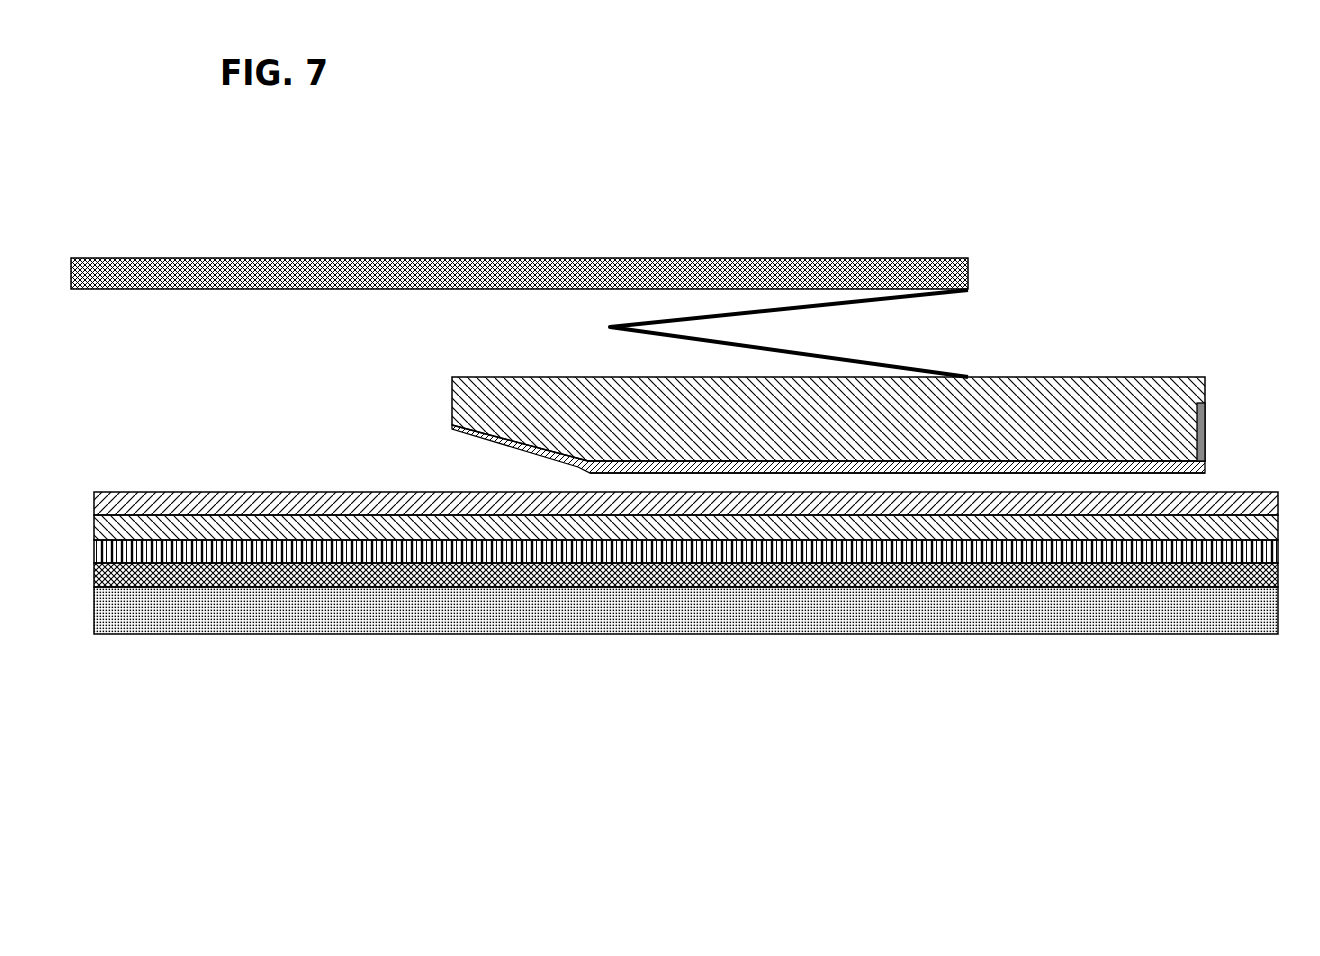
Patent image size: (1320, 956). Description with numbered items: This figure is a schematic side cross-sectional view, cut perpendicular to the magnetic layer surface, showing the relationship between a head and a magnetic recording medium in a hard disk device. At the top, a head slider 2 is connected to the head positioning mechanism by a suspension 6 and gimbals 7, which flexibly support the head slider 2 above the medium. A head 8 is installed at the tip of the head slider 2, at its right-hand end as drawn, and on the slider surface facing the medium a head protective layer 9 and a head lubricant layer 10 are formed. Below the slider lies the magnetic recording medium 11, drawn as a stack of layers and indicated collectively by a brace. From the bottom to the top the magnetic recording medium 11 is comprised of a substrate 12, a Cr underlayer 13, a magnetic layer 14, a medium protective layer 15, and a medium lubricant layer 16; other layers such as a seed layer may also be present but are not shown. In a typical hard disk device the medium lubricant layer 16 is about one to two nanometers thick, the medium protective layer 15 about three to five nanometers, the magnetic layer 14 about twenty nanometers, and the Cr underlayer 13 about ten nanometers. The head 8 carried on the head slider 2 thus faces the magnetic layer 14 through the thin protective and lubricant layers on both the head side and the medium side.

The head slider 2 is at (990, 378).
The suspension 6 is at (452, 258).
The gimbals 7 is at (727, 315).
The head 8 is at (1205, 380).
The head protective layer 9 is at (1040, 461).
The head lubricant layer 10 is at (1090, 473).
The magnetic recording medium 11 is at (686, 669).
The substrate 12 is at (363, 773).
The Cr underlayer 13 is at (808, 577).
The magnetic layer 14 is at (690, 553).
The medium protective layer 15 is at (633, 522).
The medium lubricant layer 16 is at (562, 500).